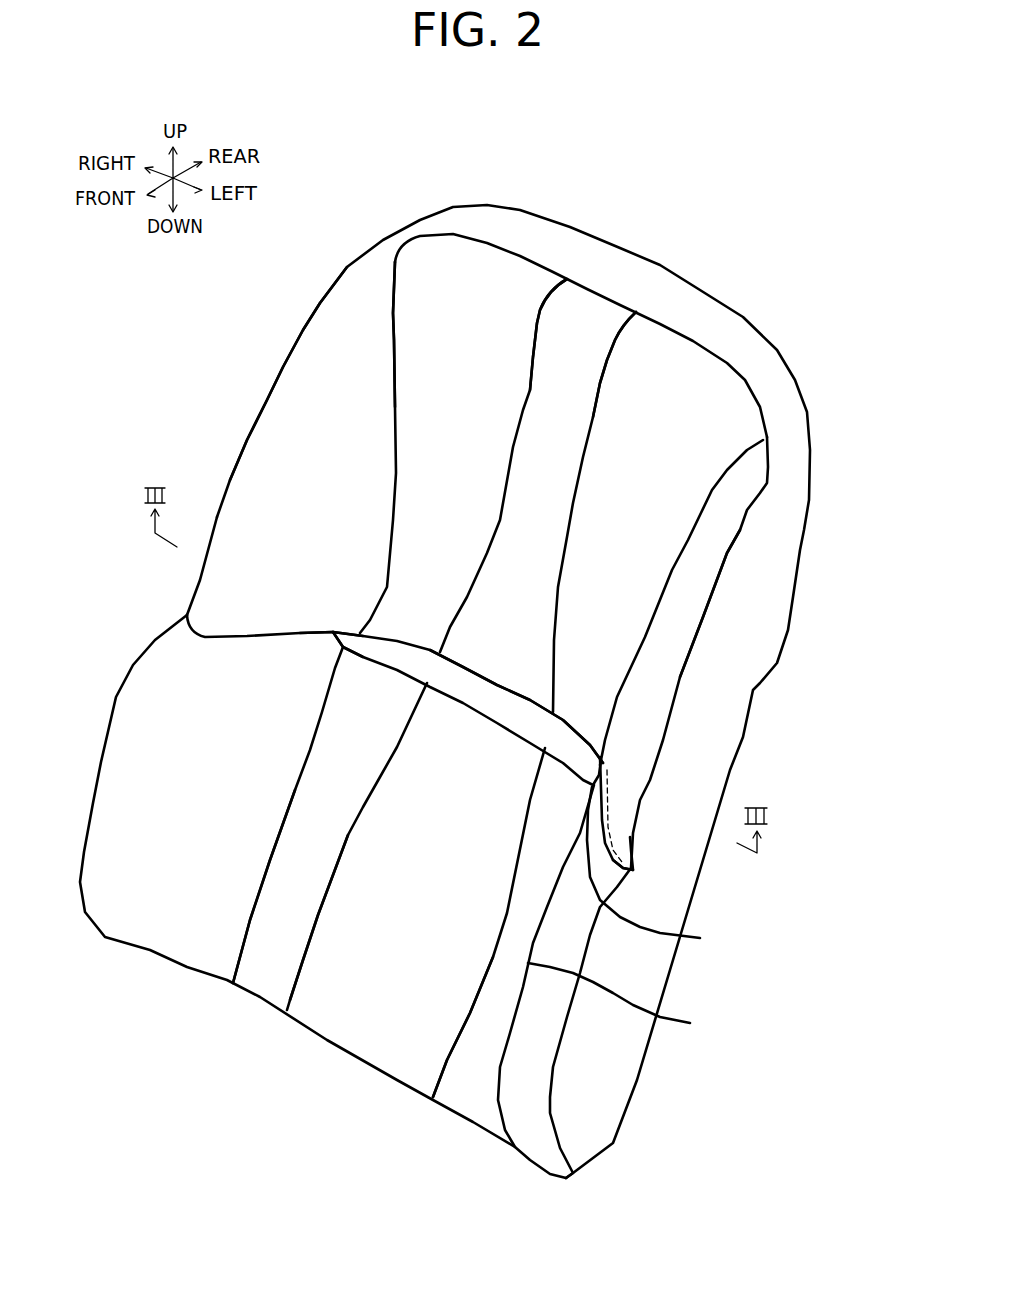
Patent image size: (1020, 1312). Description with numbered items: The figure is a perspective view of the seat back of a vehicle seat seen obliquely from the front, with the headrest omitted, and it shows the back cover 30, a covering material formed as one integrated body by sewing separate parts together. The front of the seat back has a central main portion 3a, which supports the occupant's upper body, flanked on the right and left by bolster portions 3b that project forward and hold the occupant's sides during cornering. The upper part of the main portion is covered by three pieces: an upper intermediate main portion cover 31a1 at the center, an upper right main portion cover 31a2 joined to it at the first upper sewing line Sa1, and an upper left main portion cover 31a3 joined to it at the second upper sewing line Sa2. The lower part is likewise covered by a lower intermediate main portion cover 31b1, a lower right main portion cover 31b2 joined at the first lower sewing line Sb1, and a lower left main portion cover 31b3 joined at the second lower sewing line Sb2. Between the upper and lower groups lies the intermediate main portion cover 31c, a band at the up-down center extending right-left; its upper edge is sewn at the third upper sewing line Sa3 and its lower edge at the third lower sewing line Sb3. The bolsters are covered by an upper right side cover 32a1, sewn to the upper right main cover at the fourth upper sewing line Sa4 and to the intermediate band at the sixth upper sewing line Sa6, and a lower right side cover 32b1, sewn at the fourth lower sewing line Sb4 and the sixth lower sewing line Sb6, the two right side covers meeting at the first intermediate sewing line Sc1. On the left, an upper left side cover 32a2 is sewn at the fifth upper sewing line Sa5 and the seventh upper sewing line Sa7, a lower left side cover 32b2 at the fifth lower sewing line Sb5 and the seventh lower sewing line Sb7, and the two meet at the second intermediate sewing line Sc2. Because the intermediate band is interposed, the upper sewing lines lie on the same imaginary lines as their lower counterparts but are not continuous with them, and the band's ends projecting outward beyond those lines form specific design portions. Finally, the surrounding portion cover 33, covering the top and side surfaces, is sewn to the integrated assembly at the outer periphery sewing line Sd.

The back cover 30 is at (712, 432).
The main portion 3a is at (560, 393).
The bolster portions 3b is at (350, 328).
The upper intermediate main portion cover 31a1 is at (568, 353).
The upper right main portion cover 31a2 is at (460, 313).
The upper left main portion cover 31a3 is at (663, 403).
The intermediate main portion cover 31c is at (513, 706).
The upper right side cover 32a1 is at (293, 452).
The upper left side cover 32a2 is at (683, 600).
The lower right side cover 32b1 is at (160, 857).
The lower left side cover 32b2 is at (527, 1043).
The lower intermediate main portion cover 31b1 is at (383, 1000).
The lower right main portion cover 31b2 is at (273, 927).
The lower left main portion cover 31b3 is at (480, 1050).
The surrounding portion cover 33 is at (710, 725).
The first upper sewing line Sa1 is at (513, 451).
The second upper sewing line Sa2 is at (580, 473).
The third upper sewing line Sa3 is at (488, 680).
The fourth upper sewing line Sa4 is at (393, 427).
The fifth upper sewing line Sa5 is at (668, 570).
The sixth upper sewing line Sa6 is at (336, 632).
The seventh upper sewing line Sa7 is at (605, 768).
The first lower sewing line Sb1 is at (349, 830).
The second lower sewing line Sb2 is at (503, 917).
The third lower sewing line Sb3 is at (483, 713).
The fourth lower sewing line Sb4 is at (295, 790).
The fifth lower sewing line Sb5 is at (690, 1023).
The sixth lower sewing line Sb6 is at (340, 647).
The seventh lower sewing line Sb7 is at (700, 938).
The first intermediate sewing line Sc1 is at (247, 635).
The second intermediate sewing line Sc2 is at (607, 827).
The outer periphery sewing line Sd is at (730, 552).